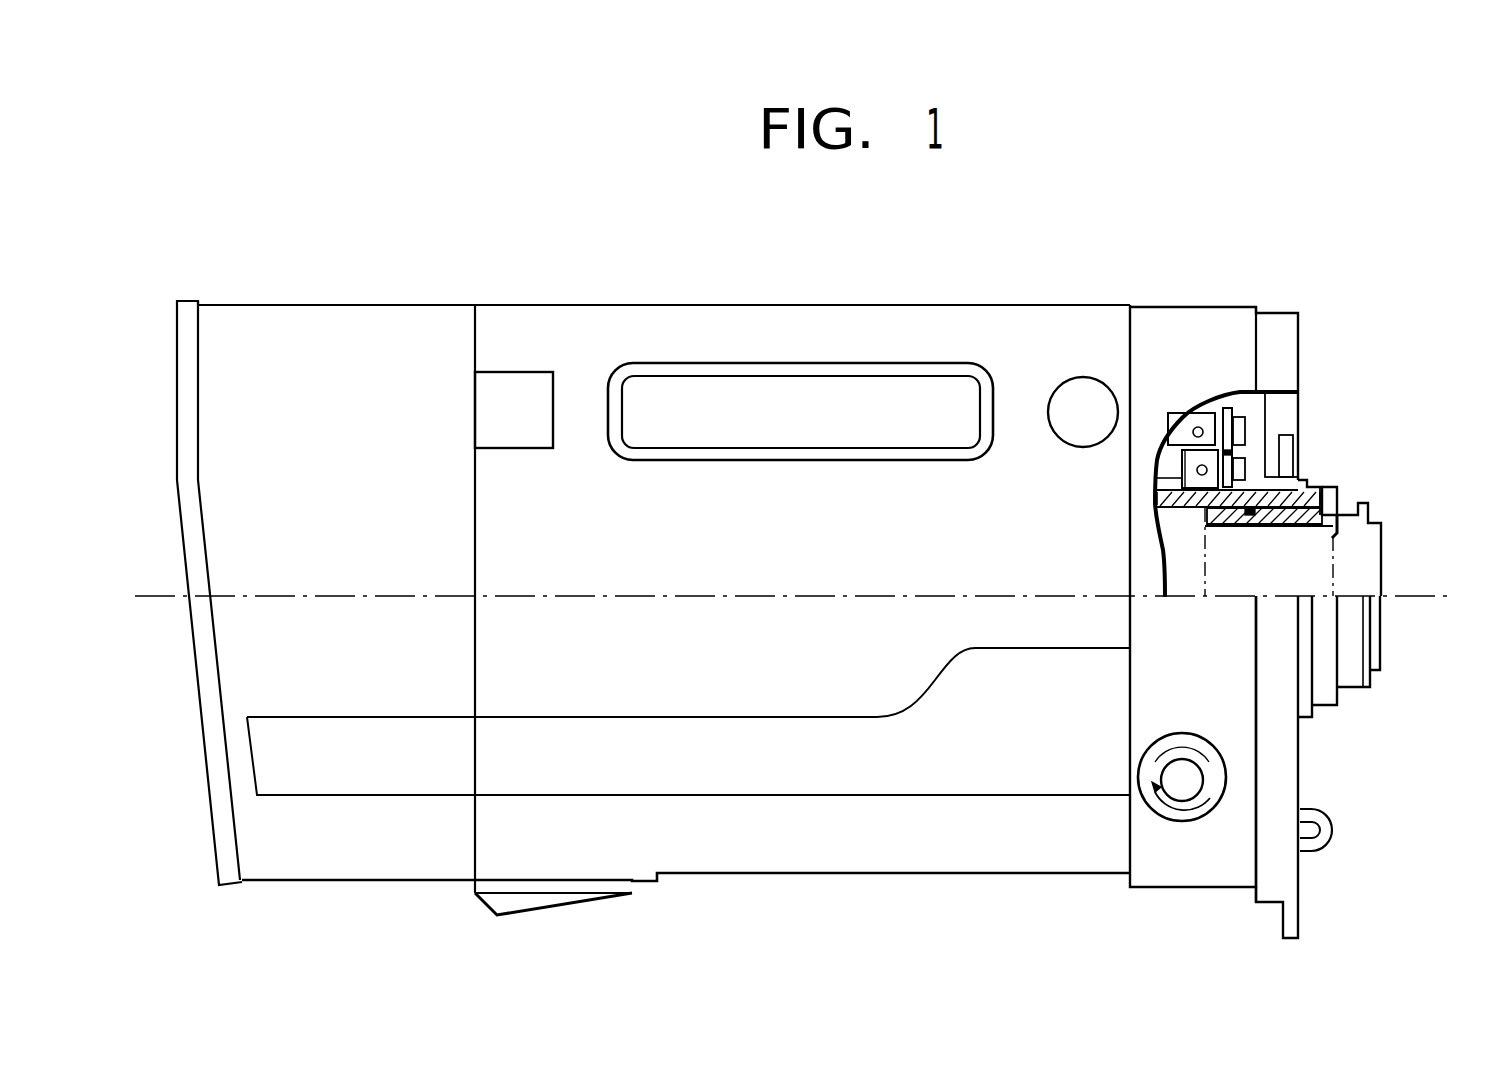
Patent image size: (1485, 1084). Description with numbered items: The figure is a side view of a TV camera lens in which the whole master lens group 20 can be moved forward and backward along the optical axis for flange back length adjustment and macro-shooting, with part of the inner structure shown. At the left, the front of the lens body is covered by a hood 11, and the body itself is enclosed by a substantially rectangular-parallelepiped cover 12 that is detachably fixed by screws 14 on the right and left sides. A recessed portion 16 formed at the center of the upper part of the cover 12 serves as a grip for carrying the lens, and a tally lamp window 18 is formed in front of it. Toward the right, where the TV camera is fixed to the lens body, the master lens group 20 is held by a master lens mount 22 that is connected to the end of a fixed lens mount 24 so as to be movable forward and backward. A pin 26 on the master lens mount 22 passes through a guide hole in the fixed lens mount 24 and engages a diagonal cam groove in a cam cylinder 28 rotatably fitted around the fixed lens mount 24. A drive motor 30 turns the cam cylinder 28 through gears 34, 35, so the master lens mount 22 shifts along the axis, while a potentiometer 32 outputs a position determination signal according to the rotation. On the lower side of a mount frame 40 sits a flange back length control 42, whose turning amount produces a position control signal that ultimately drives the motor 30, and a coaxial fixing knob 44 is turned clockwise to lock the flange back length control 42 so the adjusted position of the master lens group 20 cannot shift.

The hood 11 is at (300, 330).
The cover 12 is at (715, 322).
The screws 14 is at (1078, 390).
The recessed portion 16 is at (845, 398).
The tally lamp window 18 is at (520, 393).
The master lens group 20 is at (1320, 578).
The master lens mount 22 is at (1340, 495).
The fixed lens mount 24 is at (1165, 515).
The pin 26 is at (1322, 466).
The cam cylinder 28 is at (1322, 478).
The drive motor 30 is at (1198, 432).
The potentiometer 32 is at (1207, 470).
The gear 34 is at (1228, 430).
The gear 35 is at (1157, 478).
The mount frame 40 is at (1199, 330).
The flange back length control 42 is at (1187, 780).
The fixing knob 44 is at (1207, 773).